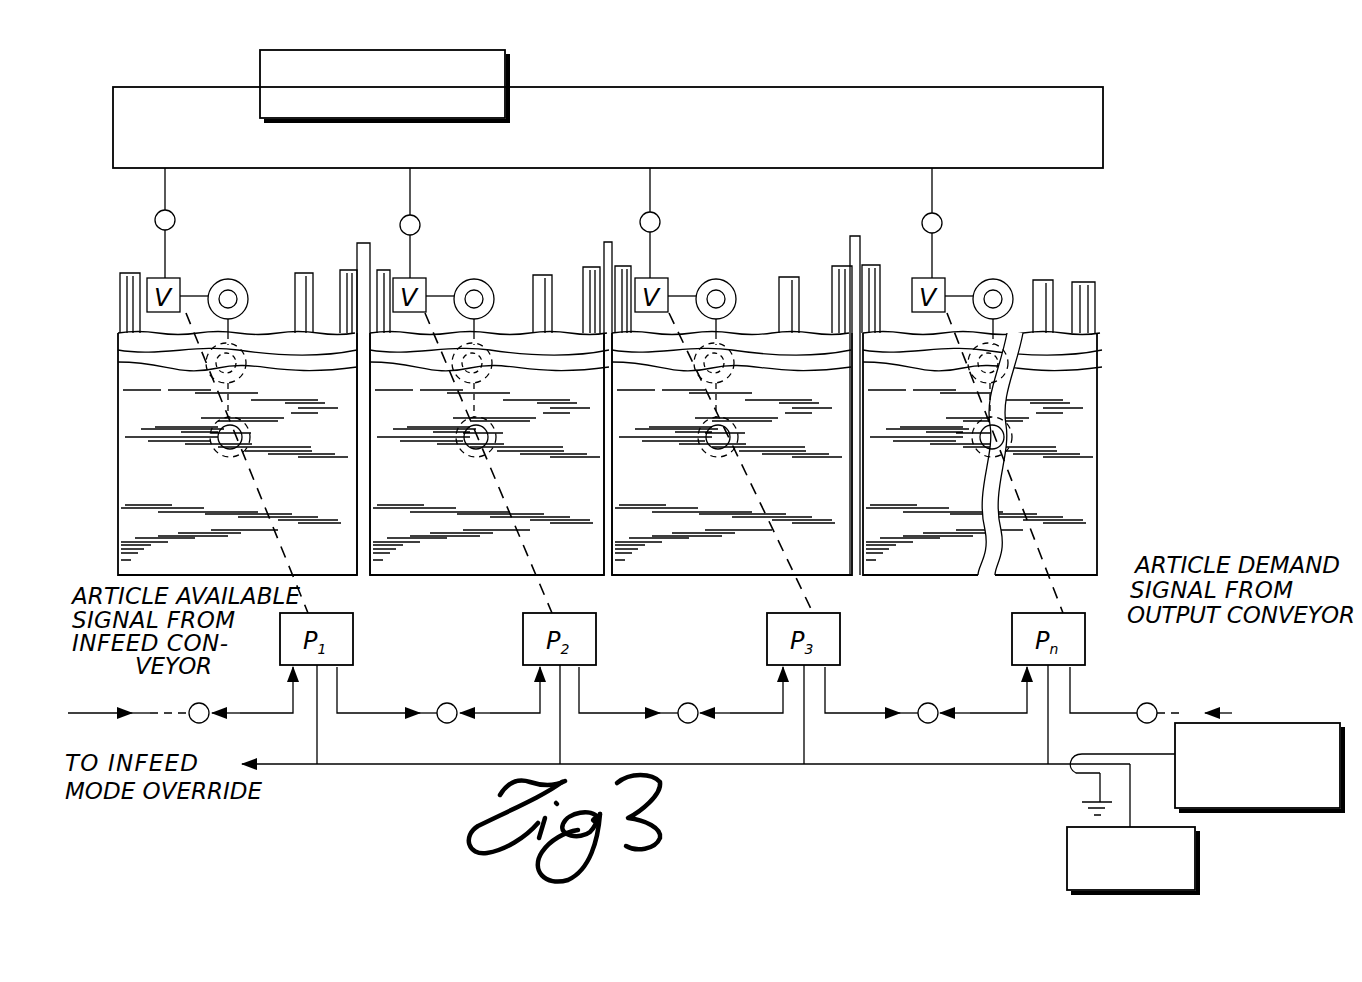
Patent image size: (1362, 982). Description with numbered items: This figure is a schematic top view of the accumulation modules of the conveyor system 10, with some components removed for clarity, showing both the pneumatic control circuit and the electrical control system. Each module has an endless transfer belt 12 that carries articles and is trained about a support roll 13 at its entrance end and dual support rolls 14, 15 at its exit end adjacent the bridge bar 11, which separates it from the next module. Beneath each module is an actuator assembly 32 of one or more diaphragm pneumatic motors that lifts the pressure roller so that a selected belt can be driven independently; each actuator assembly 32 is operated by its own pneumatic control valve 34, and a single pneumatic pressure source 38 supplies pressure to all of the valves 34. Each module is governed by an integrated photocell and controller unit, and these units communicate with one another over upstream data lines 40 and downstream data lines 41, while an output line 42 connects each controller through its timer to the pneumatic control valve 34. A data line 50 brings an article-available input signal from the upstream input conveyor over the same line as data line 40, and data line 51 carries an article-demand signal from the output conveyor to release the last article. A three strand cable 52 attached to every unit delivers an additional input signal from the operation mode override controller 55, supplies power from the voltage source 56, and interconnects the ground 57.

The conveyor system 10 is at (756, 76).
The bridge bar 11 is at (364, 243).
The endless transfer belt 12 is at (1083, 408).
The support roll 13 is at (127, 276).
The dual support roll 14 is at (302, 273).
The dual support roll 15 is at (347, 268).
The actuator assembly 32 is at (199, 396).
The pneumatic control valve 34 is at (178, 282).
The pneumatic pressure source 38 is at (425, 62).
The upstream data line 40 is at (252, 712).
The downstream data line 41 is at (381, 712).
The output line 42 is at (278, 508).
The data line 50 is at (90, 708).
The data line 51 is at (1221, 712).
The three strand cable 52 is at (1112, 772).
The operation mode override controller 55 is at (1300, 797).
The voltage source 56 is at (1072, 858).
The ground 57 is at (1098, 781).